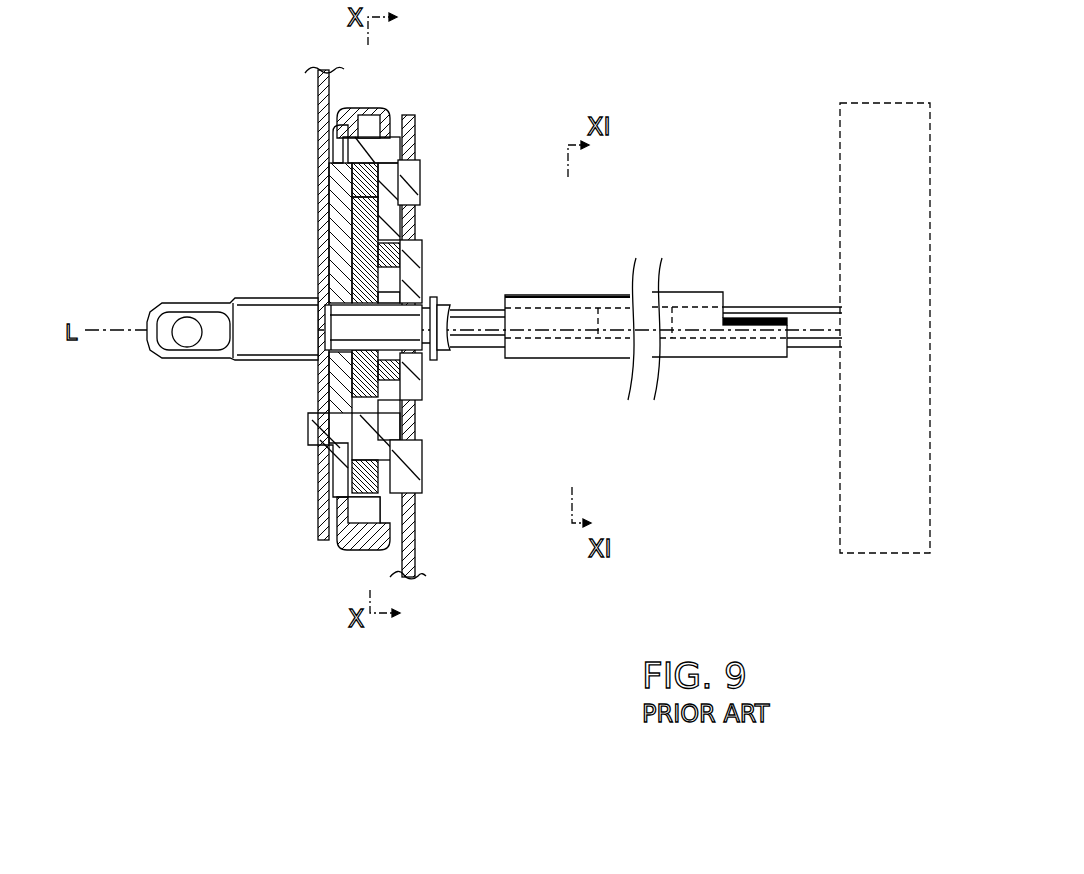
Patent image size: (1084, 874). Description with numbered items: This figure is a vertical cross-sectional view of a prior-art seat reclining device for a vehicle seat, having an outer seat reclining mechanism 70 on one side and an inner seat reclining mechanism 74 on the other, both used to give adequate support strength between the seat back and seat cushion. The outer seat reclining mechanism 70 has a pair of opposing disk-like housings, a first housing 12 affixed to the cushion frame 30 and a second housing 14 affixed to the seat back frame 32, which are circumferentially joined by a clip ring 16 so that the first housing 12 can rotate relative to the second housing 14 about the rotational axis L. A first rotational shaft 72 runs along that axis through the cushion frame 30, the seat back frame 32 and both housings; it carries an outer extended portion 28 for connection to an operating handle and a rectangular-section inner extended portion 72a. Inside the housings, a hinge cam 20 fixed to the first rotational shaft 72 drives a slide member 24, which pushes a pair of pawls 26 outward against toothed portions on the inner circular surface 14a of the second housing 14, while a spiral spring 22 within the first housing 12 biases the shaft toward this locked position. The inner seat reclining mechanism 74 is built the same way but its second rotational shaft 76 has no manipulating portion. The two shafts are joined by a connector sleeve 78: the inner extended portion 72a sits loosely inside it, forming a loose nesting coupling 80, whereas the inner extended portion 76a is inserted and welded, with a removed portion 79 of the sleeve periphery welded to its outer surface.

The first housing 12 is at (410, 217).
The second housing 14 is at (340, 377).
The inner circular surface 14a is at (400, 170).
The clip ring 16 is at (373, 107).
The hinge cam 20 is at (352, 280).
The spiral spring 22 is at (397, 403).
The slide member 24 is at (345, 246).
The pawls 26 is at (352, 172).
The outer extended portion 28 is at (195, 303).
The cushion frame 30 is at (417, 537).
The seat back frame 32 is at (318, 110).
The outer seat reclining mechanism 70 is at (411, 79).
The first rotational shaft 72 is at (400, 320).
The inner extended portion 72a is at (550, 340).
The inner seat reclining mechanism 74 is at (838, 104).
The second rotational shaft 76 is at (800, 305).
The inner extended portion 76a is at (698, 323).
The connector sleeve 78 is at (538, 296).
The removed portion 79 is at (750, 358).
The loose nesting coupling 80 is at (580, 283).